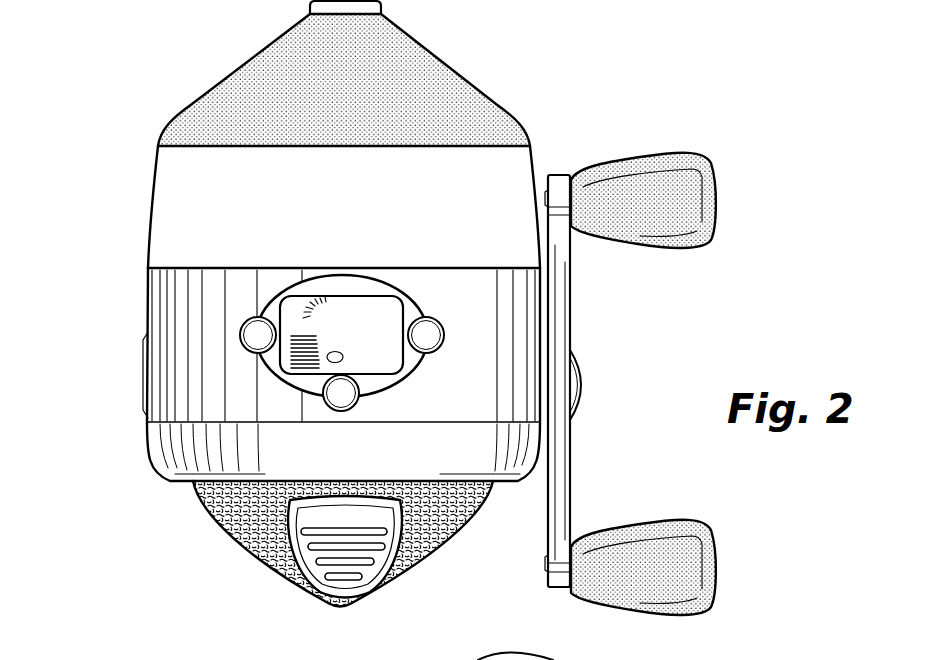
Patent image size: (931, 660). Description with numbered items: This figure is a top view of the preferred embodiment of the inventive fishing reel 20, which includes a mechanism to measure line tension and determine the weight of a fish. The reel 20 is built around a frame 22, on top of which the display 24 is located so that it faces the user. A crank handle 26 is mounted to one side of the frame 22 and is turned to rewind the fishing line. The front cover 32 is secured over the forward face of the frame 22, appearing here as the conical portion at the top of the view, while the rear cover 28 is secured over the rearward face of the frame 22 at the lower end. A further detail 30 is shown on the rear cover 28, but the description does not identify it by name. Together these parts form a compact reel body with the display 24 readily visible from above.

The fishing reel 20 is at (482, 70).
The frame 22 is at (168, 300).
The display 24 is at (363, 292).
The crank handle 26 is at (558, 492).
The rear cover 28 is at (238, 524).
The vent grille 30 is at (330, 600).
The front cover 32 is at (492, 112).